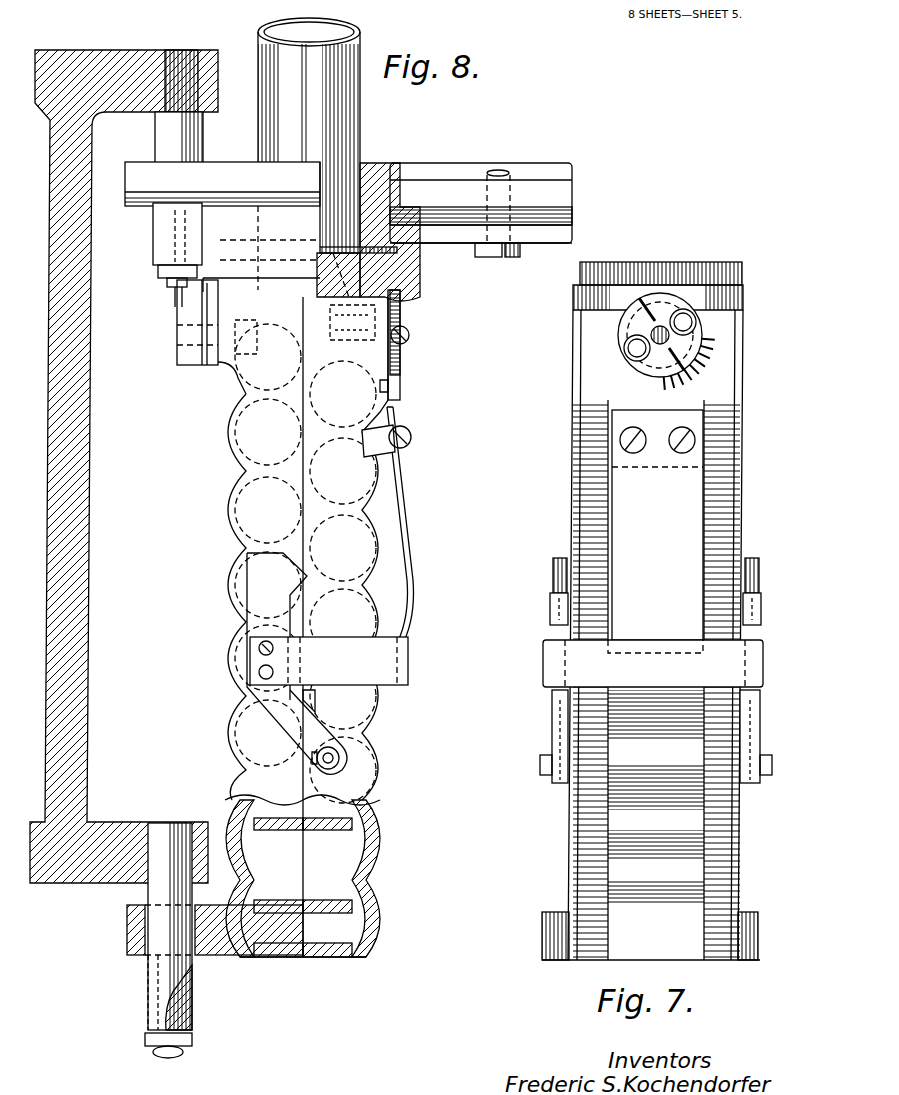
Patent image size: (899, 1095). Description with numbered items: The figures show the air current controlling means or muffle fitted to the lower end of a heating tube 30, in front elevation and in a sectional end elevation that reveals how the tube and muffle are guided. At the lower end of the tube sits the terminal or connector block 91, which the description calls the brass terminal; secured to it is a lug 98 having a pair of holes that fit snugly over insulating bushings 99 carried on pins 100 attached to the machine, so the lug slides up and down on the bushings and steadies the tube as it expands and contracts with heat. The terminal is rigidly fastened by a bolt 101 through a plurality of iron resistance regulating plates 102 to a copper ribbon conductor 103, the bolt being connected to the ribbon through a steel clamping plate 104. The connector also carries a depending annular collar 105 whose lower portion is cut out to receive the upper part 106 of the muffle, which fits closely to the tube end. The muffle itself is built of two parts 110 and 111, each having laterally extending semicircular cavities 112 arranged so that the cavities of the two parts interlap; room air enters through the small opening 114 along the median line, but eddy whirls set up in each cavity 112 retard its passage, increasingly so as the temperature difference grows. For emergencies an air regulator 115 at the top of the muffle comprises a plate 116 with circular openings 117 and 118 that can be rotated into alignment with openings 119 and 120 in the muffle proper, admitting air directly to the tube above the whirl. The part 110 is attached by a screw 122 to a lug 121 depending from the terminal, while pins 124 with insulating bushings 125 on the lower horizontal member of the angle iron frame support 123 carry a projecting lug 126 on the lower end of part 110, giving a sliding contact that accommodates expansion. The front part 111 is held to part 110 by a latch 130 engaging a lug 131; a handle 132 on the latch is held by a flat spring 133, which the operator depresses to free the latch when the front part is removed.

In FIG. 8, the heating tube 30 is at (352, 62).
In FIG. 8, the support block 91 is at (385, 178).
In FIG. 8, the lug 98 is at (218, 170).
In FIG. 8, the insulating bushing 99 is at (160, 243).
In FIG. 8, the pin 100 is at (176, 62).
In FIG. 8, the bolt 101 is at (492, 258).
In FIG. 8, the iron resistance regulating plate 102 is at (568, 195).
In FIG. 8, the copper ribbon conductor 103 is at (560, 222).
In FIG. 8, the steel clamping plate 104 is at (552, 236).
In FIG. 8, the depending annular collar 105 is at (420, 265).
In FIG. 8, the upper part of the muffle 106 is at (398, 298).
In FIG. 7, the upper part of the muffle 106 is at (648, 262).
In FIG. 8, the muffle part 110 is at (232, 528).
In FIG. 8, the front part of the muffle 111 is at (368, 543).
In FIG. 8, the semicircular cavity 112 is at (375, 398).
In FIG. 8, the small opening 114 is at (295, 958).
In FIG. 8, the air regulator 115 is at (405, 356).
In FIG. 7, the air regulator 115 is at (673, 308).
In FIG. 8, the plate 116 is at (408, 334).
In FIG. 7, the plate 116 is at (663, 298).
In FIG. 7, the circular opening 117 is at (700, 318).
In FIG. 7, the circular opening 118 is at (640, 355).
In FIG. 7, the opening 119 is at (688, 330).
In FIG. 7, the opening 120 is at (636, 343).
In FIG. 8, the lug 121 is at (183, 318).
In FIG. 8, the screw 122 is at (236, 372).
In FIG. 8, the angle iron frame support 123 is at (90, 710).
In FIG. 8, the pin 124 is at (170, 826).
In FIG. 8, the insulating bushing 125 is at (150, 993).
In FIG. 8, the projecting lug 126 is at (218, 958).
In FIG. 8, the latch 130 is at (340, 752).
In FIG. 7, the latch 130 is at (558, 737).
In FIG. 8, the lug 131 is at (312, 597).
In FIG. 7, the lug 131 is at (556, 606).
In FIG. 8, the handle 132 is at (410, 645).
In FIG. 7, the handle 132 is at (590, 665).
In FIG. 8, the flat spring 133 is at (407, 482).
In FIG. 7, the flat spring 133 is at (635, 528).